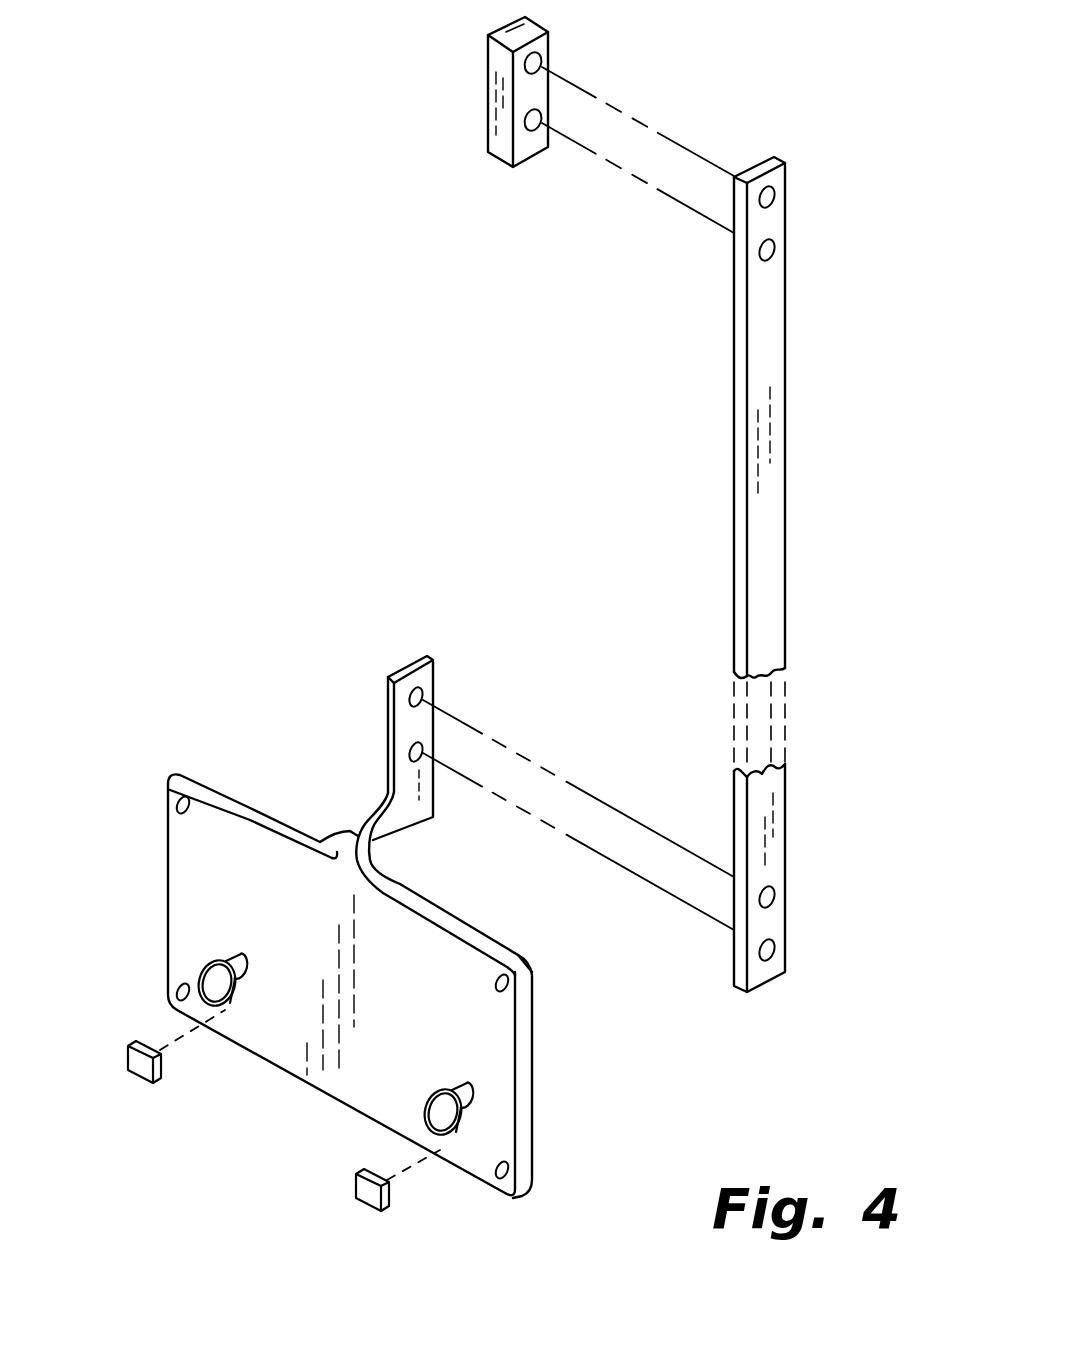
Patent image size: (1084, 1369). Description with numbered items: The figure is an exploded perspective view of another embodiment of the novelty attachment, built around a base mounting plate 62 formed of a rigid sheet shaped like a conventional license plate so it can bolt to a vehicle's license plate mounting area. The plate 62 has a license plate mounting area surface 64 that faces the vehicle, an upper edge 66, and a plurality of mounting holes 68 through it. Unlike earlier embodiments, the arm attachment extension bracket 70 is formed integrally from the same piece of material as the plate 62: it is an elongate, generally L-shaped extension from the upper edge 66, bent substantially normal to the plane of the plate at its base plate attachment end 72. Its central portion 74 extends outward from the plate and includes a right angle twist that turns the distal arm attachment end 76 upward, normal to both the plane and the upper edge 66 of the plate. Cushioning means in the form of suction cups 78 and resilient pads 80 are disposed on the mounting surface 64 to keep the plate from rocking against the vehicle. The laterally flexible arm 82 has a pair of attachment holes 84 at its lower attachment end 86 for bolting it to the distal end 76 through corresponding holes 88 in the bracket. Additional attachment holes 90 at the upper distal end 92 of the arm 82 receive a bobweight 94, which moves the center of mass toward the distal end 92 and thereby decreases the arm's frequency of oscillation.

The base mounting plate 62 is at (564, 1078).
The license plate mounting area surface 64 is at (397, 1012).
The upper edge 66 is at (236, 800).
The mounting holes 68 is at (178, 812).
The arm attachment extension bracket 70 is at (436, 797).
The base plate attachment end 72 is at (372, 867).
The central portion 74 is at (362, 811).
The distal arm attachment end 76 is at (436, 683).
The suction cups 78 is at (243, 990).
The resilient pads 80 is at (358, 1172).
The laterally flexible arm 82 is at (734, 532).
The attachment holes 84 is at (777, 947).
The lower attachment end 86 is at (775, 980).
The holes 88 is at (412, 750).
The additional attachment holes 90 is at (777, 200).
The upper distal end 92 is at (771, 160).
The bobweight 94 is at (490, 84).